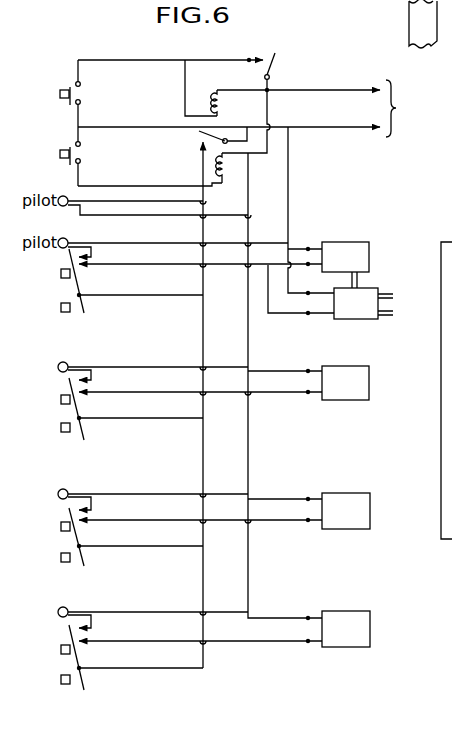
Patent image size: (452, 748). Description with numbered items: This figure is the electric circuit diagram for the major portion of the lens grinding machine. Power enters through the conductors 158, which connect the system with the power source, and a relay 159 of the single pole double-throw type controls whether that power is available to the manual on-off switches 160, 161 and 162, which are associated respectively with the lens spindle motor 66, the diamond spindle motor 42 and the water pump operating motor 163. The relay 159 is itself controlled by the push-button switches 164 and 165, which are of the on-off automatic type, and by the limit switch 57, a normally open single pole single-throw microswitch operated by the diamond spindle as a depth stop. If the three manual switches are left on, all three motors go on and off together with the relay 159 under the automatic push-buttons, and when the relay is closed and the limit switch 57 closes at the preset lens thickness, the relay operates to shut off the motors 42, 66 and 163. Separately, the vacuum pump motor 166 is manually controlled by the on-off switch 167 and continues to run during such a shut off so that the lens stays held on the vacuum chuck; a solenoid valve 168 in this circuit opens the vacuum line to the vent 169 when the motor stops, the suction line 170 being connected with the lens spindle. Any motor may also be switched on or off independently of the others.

The limit switch 57 is at (278, 73).
The conductors 158 is at (415, 108).
The relay 159 is at (197, 138).
The push-button switch 164 is at (68, 77).
The push-button switch 165 is at (68, 139).
The vacuum pump motor 166 is at (371, 256).
The on-off switch 167 is at (75, 313).
The solenoid valve 168 is at (377, 287).
The vent 169 is at (396, 297).
The suction line 170 is at (393, 316).
The lens spindle motor 66 is at (372, 390).
The diamond spindle motor 42 is at (374, 518).
The manual on-off switch 160 is at (75, 437).
The manual on-off switch 161 is at (76, 566).
The manual on-off switch 162 is at (76, 692).
The water pump operating motor 163 is at (373, 630).